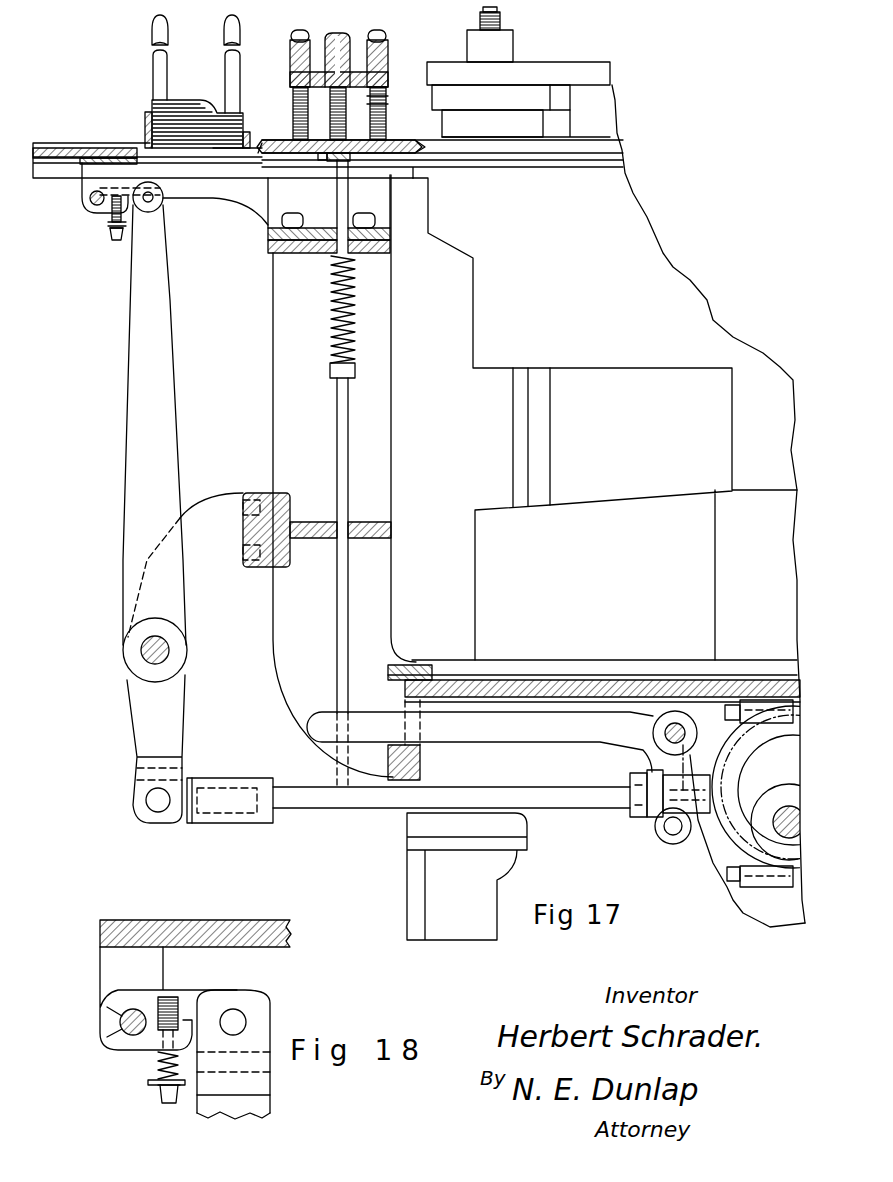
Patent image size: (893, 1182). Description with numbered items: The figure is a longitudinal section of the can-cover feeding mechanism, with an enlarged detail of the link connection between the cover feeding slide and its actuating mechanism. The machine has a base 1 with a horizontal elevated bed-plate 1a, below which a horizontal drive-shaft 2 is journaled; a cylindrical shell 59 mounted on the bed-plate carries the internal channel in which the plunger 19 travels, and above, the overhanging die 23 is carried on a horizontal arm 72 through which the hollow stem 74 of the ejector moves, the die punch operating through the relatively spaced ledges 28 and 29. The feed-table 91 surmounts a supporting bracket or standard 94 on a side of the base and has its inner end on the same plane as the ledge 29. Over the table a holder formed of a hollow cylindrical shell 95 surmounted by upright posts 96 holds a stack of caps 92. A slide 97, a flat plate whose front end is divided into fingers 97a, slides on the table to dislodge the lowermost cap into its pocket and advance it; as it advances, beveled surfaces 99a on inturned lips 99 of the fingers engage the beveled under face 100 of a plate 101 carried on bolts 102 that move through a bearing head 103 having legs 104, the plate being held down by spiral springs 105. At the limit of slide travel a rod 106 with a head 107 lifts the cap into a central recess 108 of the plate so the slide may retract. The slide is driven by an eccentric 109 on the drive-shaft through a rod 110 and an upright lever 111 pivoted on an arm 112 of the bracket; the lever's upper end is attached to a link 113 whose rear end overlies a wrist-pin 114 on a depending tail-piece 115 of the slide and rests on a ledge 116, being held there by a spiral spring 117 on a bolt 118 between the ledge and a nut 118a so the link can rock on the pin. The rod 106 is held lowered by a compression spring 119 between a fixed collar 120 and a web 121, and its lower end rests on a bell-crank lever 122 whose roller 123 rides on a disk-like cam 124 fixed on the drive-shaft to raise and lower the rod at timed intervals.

In FIG. 17, the base 1 is at (406, 822).
In FIG. 17, the bed-plate or platform 1a is at (571, 685).
In FIG. 17, the drive-shaft 2 is at (745, 840).
In FIG. 17, the plunger 19 is at (551, 441).
In FIG. 17, the overhanging die 23 is at (570, 100).
In FIG. 17, the upper ledge 28 is at (558, 137).
In FIG. 17, the lower ledge 29 is at (521, 164).
In FIG. 17, the cylindrical shell 59 is at (476, 586).
In FIG. 17, the horizontal arm 72 is at (543, 68).
In FIG. 17, the hollow stem 74 is at (500, 17).
In FIG. 17, the feed-table 91 is at (62, 165).
In FIG. 17, the caps 92 is at (200, 110).
In FIG. 17, the supporting bracket or standard 94 is at (273, 433).
In FIG. 17, the hollow cylindrical shell 95 is at (145, 119).
In FIG. 17, the upright posts 96 is at (153, 75).
In FIG. 17, the slide 97 is at (235, 200).
In FIG. 18, the slide 97 is at (217, 925).
In FIG. 17, the fingers 97a is at (305, 163).
In FIG. 17, the inturned lips 99 is at (232, 152).
In FIG. 17, the beveled or inclined surfaces 99a is at (262, 140).
In FIG. 17, the beveled under face 100 is at (275, 141).
In FIG. 17, the plate 101 is at (410, 133).
In FIG. 17, the rods or bolts 102 is at (343, 45).
In FIG. 17, the bearing head 103 is at (384, 53).
In FIG. 17, the legs 104 is at (386, 98).
In FIG. 17, the spiral bolt-encircling springs 105 is at (296, 104).
In FIG. 17, the rod 106 is at (338, 433).
In FIG. 17, the head 107 is at (342, 161).
In FIG. 17, the central recess 108 is at (321, 153).
In FIG. 17, the eccentric 109 is at (768, 853).
In FIG. 17, the rod 110 is at (346, 805).
In FIG. 17, the lever 111 is at (128, 488).
In FIG. 18, the lever 111 is at (271, 1116).
In FIG. 17, the arm 112 is at (207, 503).
In FIG. 18, the link 113 is at (195, 994).
In FIG. 17, the wrist-pin 114 is at (93, 210).
In FIG. 18, the wrist-pin 114 is at (120, 1022).
In FIG. 17, the tail-piece 115 is at (82, 186).
In FIG. 18, the tail-piece 115 is at (100, 978).
In FIG. 17, the ledge 116 is at (106, 216).
In FIG. 18, the ledge 116 is at (148, 1048).
In FIG. 17, the spiral spring 117 is at (126, 222).
In FIG. 18, the spiral spring 117 is at (150, 1083).
In FIG. 17, the bolt 118 is at (116, 241).
In FIG. 18, the bolt 118 is at (166, 1104).
In FIG. 17, the head or nut 118a is at (124, 232).
In FIG. 18, the head or nut 118a is at (162, 1092).
In FIG. 17, the spiral compression spring 119 is at (331, 314).
In FIG. 17, the fixed collar 120 is at (330, 379).
In FIG. 17, the lug or web 121 is at (316, 253).
In FIG. 17, the bell-crank lever 122 is at (556, 740).
In FIG. 17, the roller 123 is at (656, 832).
In FIG. 17, the disk-like cam 124 is at (766, 913).